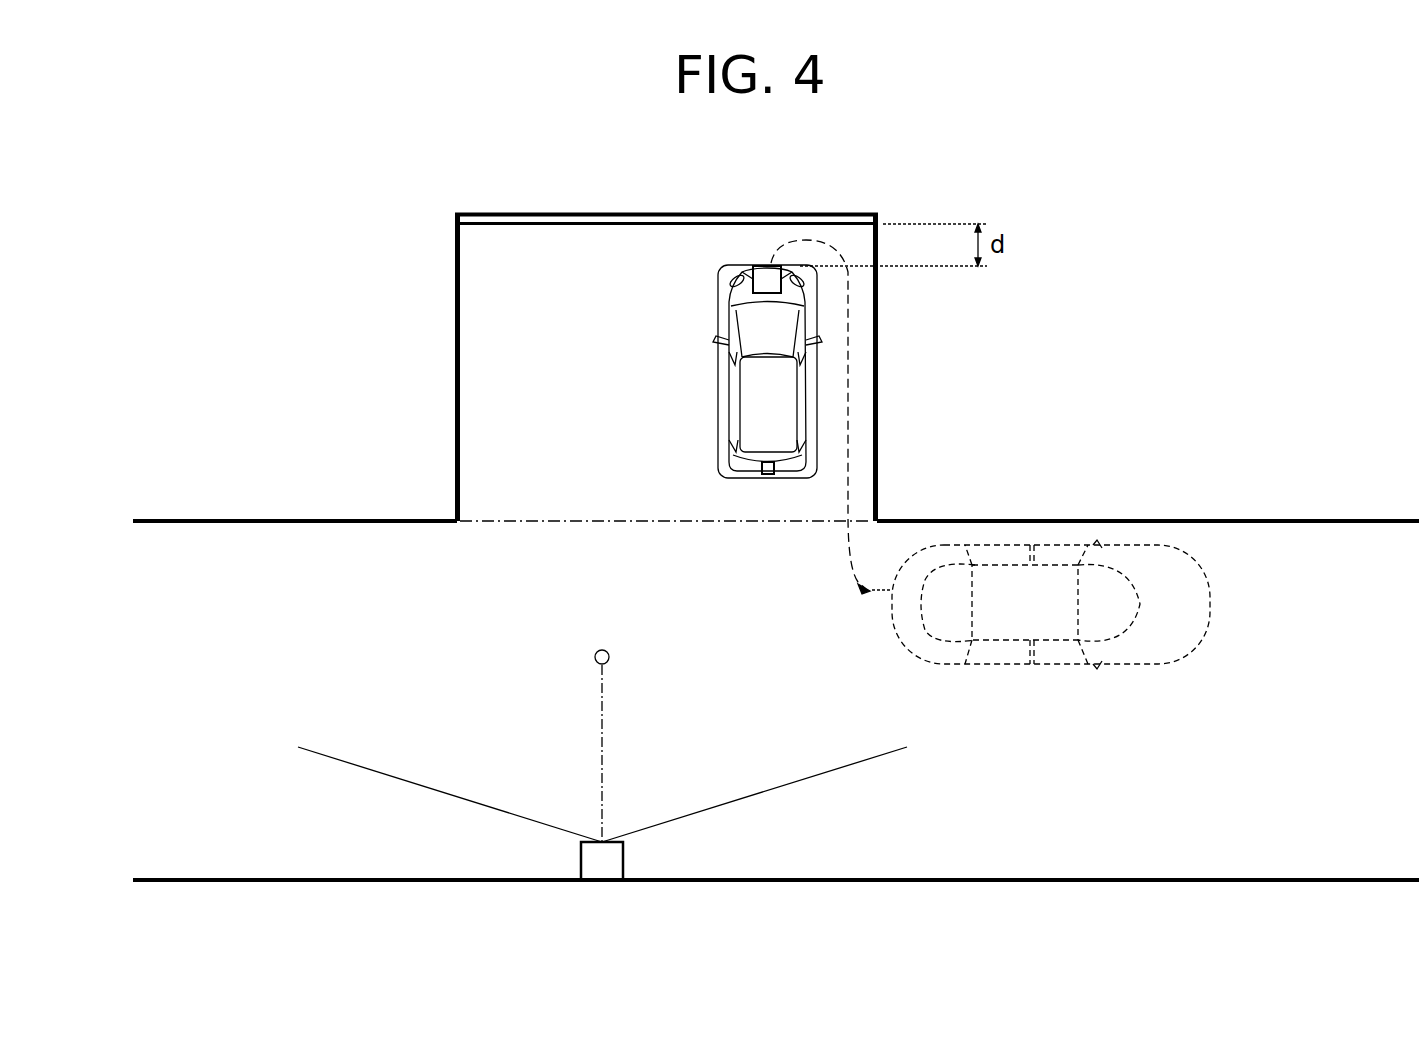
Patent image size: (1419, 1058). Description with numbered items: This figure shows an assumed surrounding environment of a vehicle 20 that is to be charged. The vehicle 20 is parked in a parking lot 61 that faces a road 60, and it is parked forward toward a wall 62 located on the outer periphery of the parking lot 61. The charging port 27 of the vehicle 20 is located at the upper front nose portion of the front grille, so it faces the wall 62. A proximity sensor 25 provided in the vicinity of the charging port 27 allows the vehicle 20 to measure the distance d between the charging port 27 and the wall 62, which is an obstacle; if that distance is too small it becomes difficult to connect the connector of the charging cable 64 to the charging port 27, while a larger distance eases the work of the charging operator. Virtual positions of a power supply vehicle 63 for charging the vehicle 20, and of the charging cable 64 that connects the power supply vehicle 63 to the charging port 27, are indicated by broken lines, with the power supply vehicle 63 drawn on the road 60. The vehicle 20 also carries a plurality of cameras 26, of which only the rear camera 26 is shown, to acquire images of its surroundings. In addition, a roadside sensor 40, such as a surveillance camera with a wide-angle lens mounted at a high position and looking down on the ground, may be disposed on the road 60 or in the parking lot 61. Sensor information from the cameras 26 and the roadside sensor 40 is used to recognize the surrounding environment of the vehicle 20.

The vehicle 20 is at (726, 368).
The proximity sensor 25 is at (771, 294).
The camera 26 is at (768, 476).
The charging port 27 is at (767, 265).
The roadside sensor 40 is at (604, 862).
The road 60 is at (1334, 718).
The parking lot 61 is at (567, 408).
The wall 62 is at (566, 227).
The power supply vehicle 63 is at (1152, 565).
The charging cable 64 is at (850, 393).